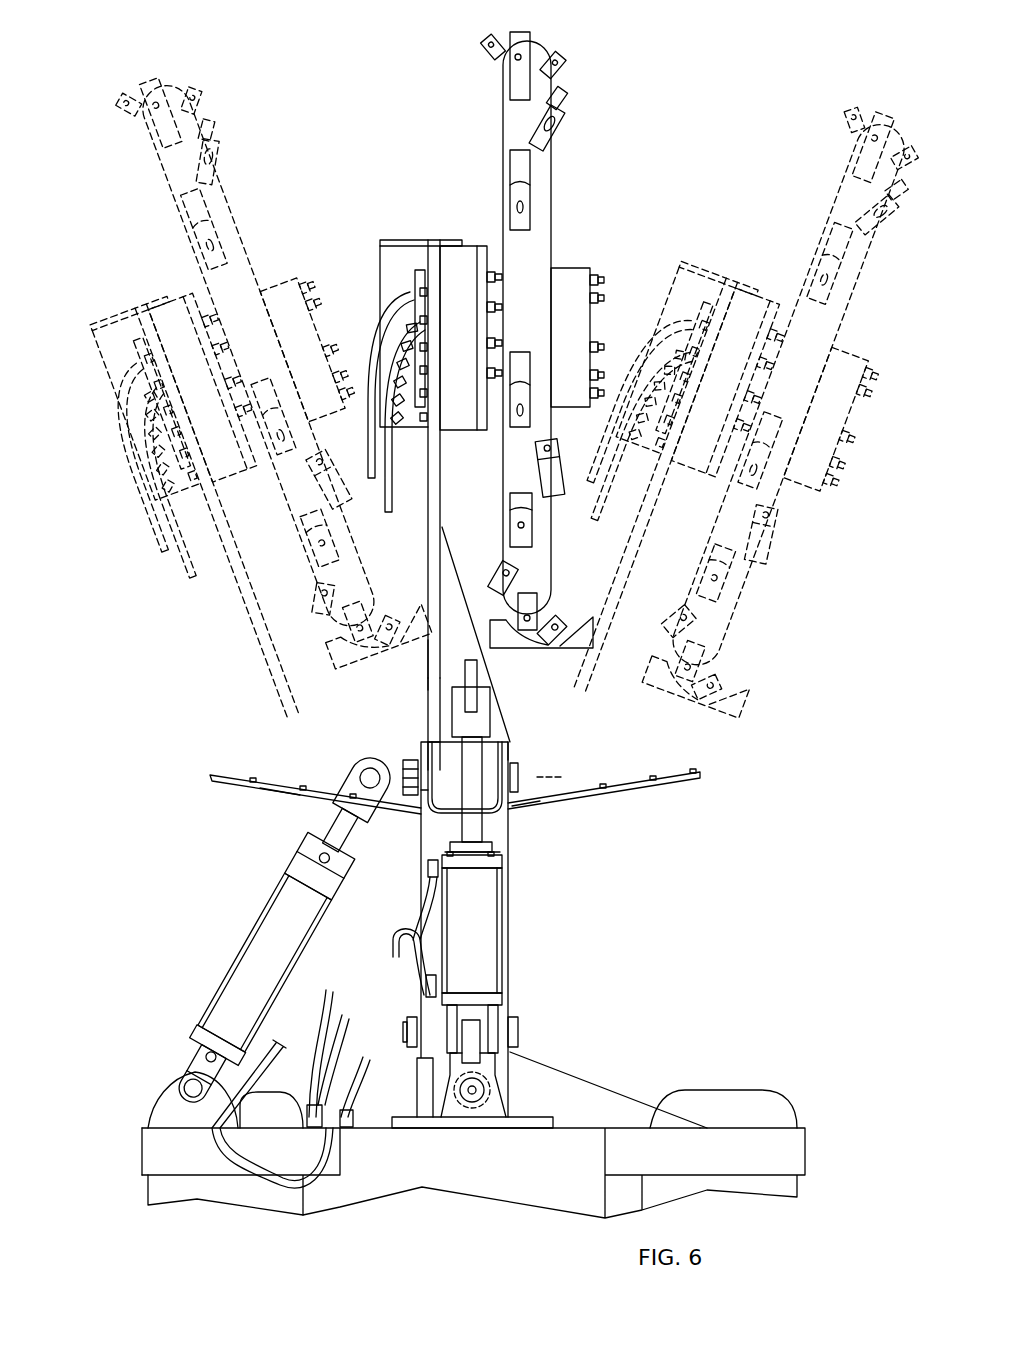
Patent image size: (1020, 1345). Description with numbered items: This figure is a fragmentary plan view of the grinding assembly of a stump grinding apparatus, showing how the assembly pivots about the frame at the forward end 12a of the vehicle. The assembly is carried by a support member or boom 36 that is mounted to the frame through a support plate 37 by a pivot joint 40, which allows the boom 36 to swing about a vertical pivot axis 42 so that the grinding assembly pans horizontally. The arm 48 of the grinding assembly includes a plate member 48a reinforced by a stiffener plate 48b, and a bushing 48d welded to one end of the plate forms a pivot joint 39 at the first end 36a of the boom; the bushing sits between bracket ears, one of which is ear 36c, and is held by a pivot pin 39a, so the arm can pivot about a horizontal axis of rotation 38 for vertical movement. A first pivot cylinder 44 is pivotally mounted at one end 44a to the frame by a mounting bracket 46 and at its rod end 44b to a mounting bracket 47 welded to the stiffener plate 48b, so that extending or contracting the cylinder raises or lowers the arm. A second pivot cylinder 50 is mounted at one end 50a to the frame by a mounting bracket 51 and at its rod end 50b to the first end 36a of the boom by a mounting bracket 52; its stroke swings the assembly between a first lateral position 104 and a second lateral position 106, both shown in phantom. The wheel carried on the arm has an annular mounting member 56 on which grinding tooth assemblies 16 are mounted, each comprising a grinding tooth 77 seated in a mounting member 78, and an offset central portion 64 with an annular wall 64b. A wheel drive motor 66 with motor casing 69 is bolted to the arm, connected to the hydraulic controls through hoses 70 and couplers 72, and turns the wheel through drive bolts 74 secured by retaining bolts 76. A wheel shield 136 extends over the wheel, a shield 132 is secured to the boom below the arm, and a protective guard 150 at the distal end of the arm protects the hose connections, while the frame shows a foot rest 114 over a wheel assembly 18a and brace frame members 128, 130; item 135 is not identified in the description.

The forward end 12a is at (592, 1125).
The grinding tooth assemblies 16 is at (586, 64).
The wheel assemblies 18a is at (718, 1100).
The support member 36 is at (512, 833).
The first end 36a is at (512, 753).
The bracket ear 36c is at (412, 775).
The support plate 37 is at (553, 1117).
The horizontal axis of rotation 38 is at (575, 775).
The pivot joint 39 is at (422, 730).
The pivot pin 39a is at (402, 760).
The pivot joint 40 is at (497, 1060).
The vertical pivot axis 42 is at (500, 1005).
The first pivot cylinder 44 is at (500, 915).
The one end 44a is at (520, 1033).
The rod end 44b is at (495, 725).
The mounting bracket 46 is at (452, 1100).
The mounting bracket 47 is at (470, 668).
The arm 48 is at (416, 550).
The plate member 48a is at (428, 663).
The stiffener plate 48b is at (446, 563).
The bushing 48d is at (535, 806).
The second pivot cylinder 50 is at (277, 926).
The one end 50a is at (197, 1062).
The rod end 50b is at (374, 847).
The mounting bracket 51 is at (170, 1105).
The mounting bracket 52 is at (331, 766).
The annular mounting member 56 is at (545, 170).
The central portion 64 is at (572, 254).
The annular wall 64b is at (568, 408).
The wheel drive motor 66 is at (451, 228).
The motor casing 69 is at (460, 415).
The hoses 70 is at (385, 508).
The couplers 72 is at (412, 325).
The drive bolts 74 is at (600, 345).
The retaining bolts 76 is at (602, 392).
The grinding tooth 77 is at (575, 95).
The mounting member 78 is at (566, 132).
The first lateral position 104 is at (216, 70).
The second lateral position 106 is at (831, 81).
The foot rest 114 is at (827, 1186).
The brace frame member 128 is at (765, 1135).
The brace frame member 130 is at (155, 1163).
The shield 132 is at (232, 770).
The plate edge 135 is at (268, 790).
The wheel shield 136 is at (585, 640).
The protective guard 150 is at (395, 240).